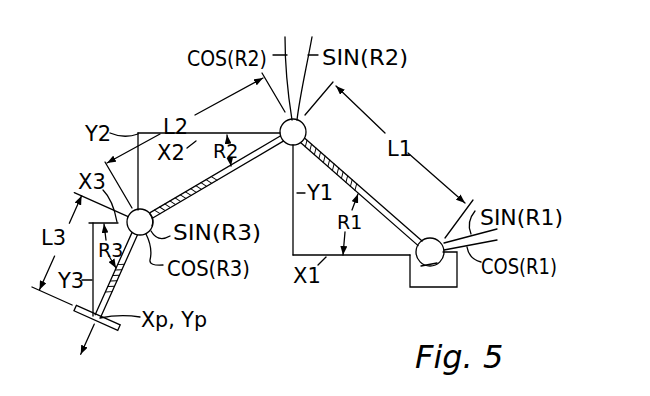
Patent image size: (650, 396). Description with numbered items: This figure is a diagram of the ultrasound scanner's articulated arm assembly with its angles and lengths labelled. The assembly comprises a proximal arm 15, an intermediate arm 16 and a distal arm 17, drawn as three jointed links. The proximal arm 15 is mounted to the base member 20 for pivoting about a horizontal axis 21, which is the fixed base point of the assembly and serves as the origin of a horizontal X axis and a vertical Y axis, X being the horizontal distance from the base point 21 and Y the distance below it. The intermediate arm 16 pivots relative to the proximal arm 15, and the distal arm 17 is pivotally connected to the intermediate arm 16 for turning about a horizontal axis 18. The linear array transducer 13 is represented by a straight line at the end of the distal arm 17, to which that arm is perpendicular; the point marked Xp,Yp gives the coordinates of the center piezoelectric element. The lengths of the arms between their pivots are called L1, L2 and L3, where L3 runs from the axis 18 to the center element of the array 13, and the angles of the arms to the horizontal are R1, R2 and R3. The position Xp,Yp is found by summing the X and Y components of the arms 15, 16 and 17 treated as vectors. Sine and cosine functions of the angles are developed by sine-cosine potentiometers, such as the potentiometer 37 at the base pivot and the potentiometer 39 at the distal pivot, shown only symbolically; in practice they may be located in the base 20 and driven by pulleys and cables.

The linear array transducer 13 is at (103, 330).
The proximal arm 15 is at (339, 166).
The intermediate arm 16 is at (260, 153).
The distal arm 17 is at (119, 281).
The horizontal axis 18 is at (144, 209).
The base member 20 is at (426, 277).
The horizontal pivot axis 21 is at (424, 265).
The sine-cosine potentiometer 37 is at (428, 238).
The sine-cosine potentiometer 39 is at (153, 218).